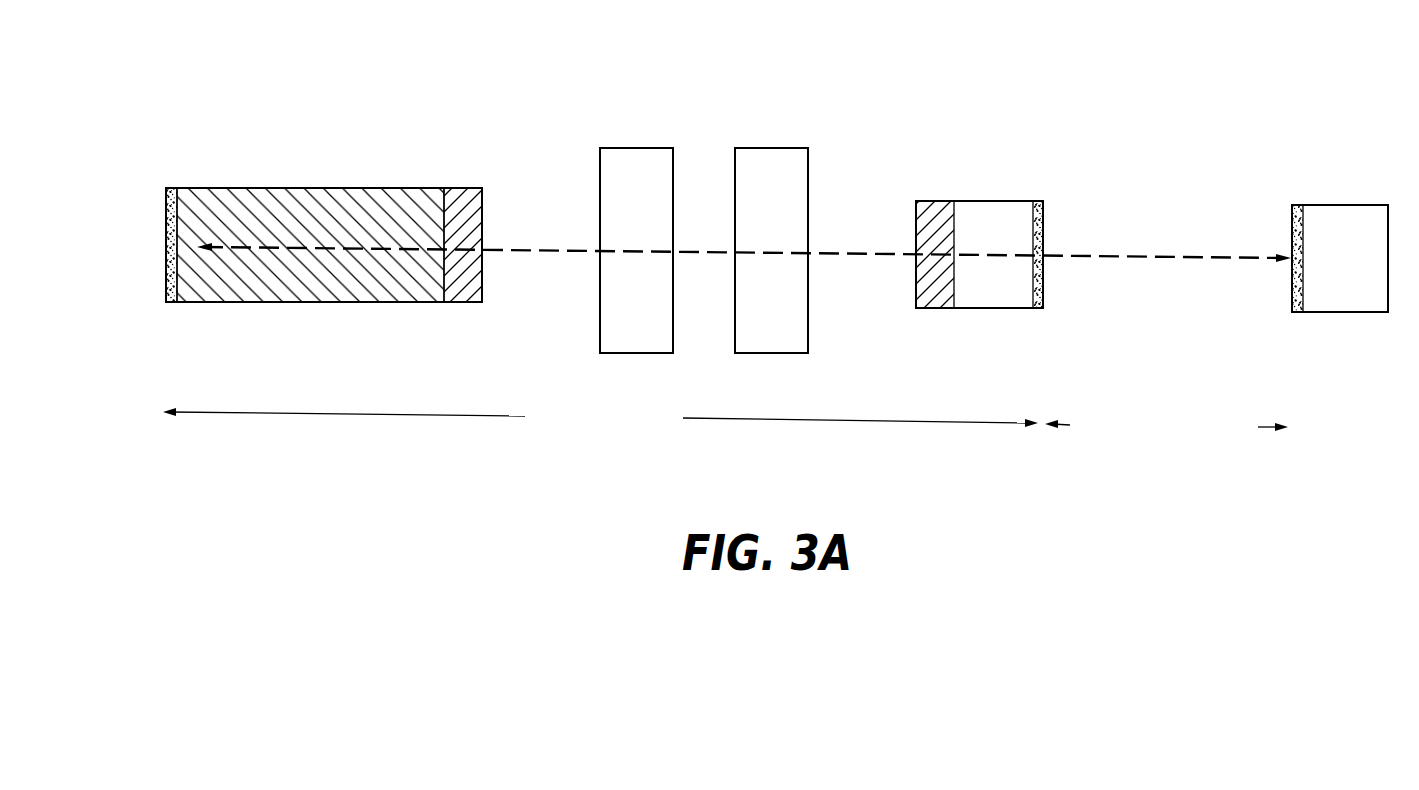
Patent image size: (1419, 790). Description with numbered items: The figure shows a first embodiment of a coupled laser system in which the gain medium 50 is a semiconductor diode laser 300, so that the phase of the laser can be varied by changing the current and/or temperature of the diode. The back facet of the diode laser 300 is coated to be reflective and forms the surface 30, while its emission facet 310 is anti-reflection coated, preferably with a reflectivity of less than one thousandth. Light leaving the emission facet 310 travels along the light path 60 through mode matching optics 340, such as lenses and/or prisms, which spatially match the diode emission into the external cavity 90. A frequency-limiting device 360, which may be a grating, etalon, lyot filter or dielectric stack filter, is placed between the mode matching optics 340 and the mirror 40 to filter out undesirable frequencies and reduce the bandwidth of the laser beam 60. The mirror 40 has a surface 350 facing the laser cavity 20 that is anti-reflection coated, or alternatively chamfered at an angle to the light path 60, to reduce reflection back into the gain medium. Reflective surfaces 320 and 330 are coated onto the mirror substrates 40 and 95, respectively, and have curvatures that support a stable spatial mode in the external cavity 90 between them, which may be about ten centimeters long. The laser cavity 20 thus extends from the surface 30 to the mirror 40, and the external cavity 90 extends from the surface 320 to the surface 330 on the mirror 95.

The gain medium 50 is at (217, 118).
The surface 30 is at (166, 207).
The semiconductor diode laser 300 is at (395, 188).
The emission facet 310 is at (457, 303).
The mode matching optics 340 is at (613, 148).
The frequency-limiting device 360 is at (759, 148).
The mirror 40 is at (1003, 190).
The surface 350 is at (937, 201).
The reflective surface 320 is at (1043, 283).
The light path 60 is at (1097, 255).
The mirror 95 is at (1352, 205).
The reflective surface 330 is at (1290, 228).
The laser cavity 20 is at (600, 419).
The external cavity 90 is at (1166, 425).